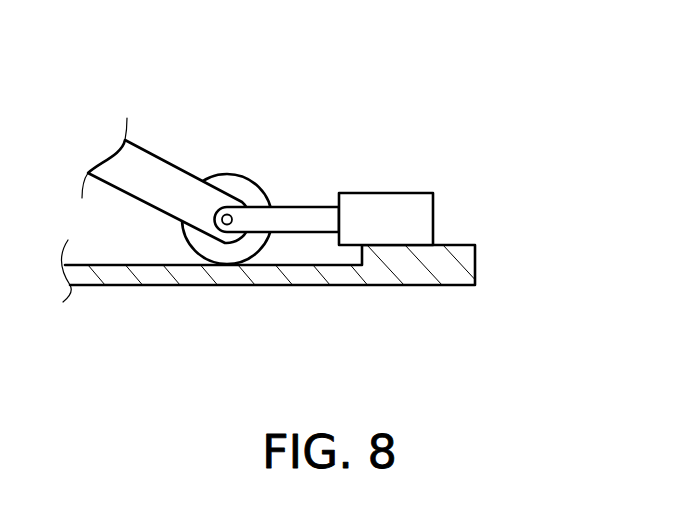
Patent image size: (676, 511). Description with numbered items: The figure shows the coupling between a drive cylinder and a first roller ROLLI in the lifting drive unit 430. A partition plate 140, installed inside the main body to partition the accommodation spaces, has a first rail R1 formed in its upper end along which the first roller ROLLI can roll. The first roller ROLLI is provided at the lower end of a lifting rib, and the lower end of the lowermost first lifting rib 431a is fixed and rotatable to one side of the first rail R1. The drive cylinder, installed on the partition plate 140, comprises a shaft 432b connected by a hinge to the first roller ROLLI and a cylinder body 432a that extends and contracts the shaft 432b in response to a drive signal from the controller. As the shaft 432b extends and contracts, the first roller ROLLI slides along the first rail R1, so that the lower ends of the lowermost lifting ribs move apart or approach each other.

The partition plate 140 is at (405, 262).
The first roller ROLLI is at (233, 174).
The first lifting rib 431a is at (157, 168).
The lifting drive unit 430 is at (393, 179).
The shaft 432b is at (298, 213).
The cylinder body 432a is at (445, 214).
The first rail R1 is at (272, 264).